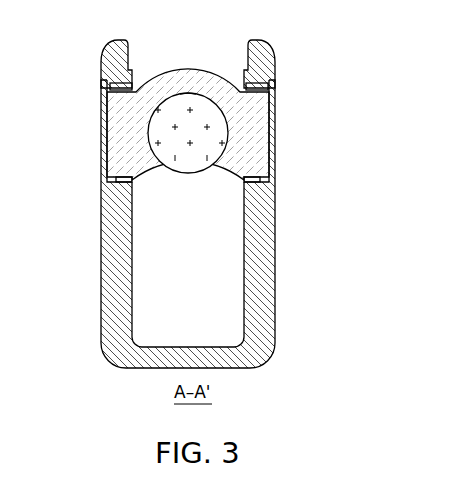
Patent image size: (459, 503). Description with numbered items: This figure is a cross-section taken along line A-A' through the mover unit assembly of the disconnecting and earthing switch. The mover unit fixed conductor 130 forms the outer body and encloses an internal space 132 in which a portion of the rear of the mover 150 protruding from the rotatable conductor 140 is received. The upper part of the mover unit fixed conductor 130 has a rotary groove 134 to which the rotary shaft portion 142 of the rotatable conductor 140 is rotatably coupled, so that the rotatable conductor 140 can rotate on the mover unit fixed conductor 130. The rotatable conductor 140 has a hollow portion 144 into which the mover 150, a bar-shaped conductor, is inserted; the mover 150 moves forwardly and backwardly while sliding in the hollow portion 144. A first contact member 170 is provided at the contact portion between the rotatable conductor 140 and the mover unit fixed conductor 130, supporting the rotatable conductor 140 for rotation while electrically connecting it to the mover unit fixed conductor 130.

The mover unit fixed conductor 130 is at (258, 225).
The internal space 132 is at (225, 270).
The rotary groove 134 is at (101, 143).
The rotatable conductor 140 is at (203, 75).
The rotary shaft portion 142 is at (118, 100).
The hollow portion 144 is at (187, 92).
The mover 150 is at (212, 127).
The first contact member 170 is at (256, 76).